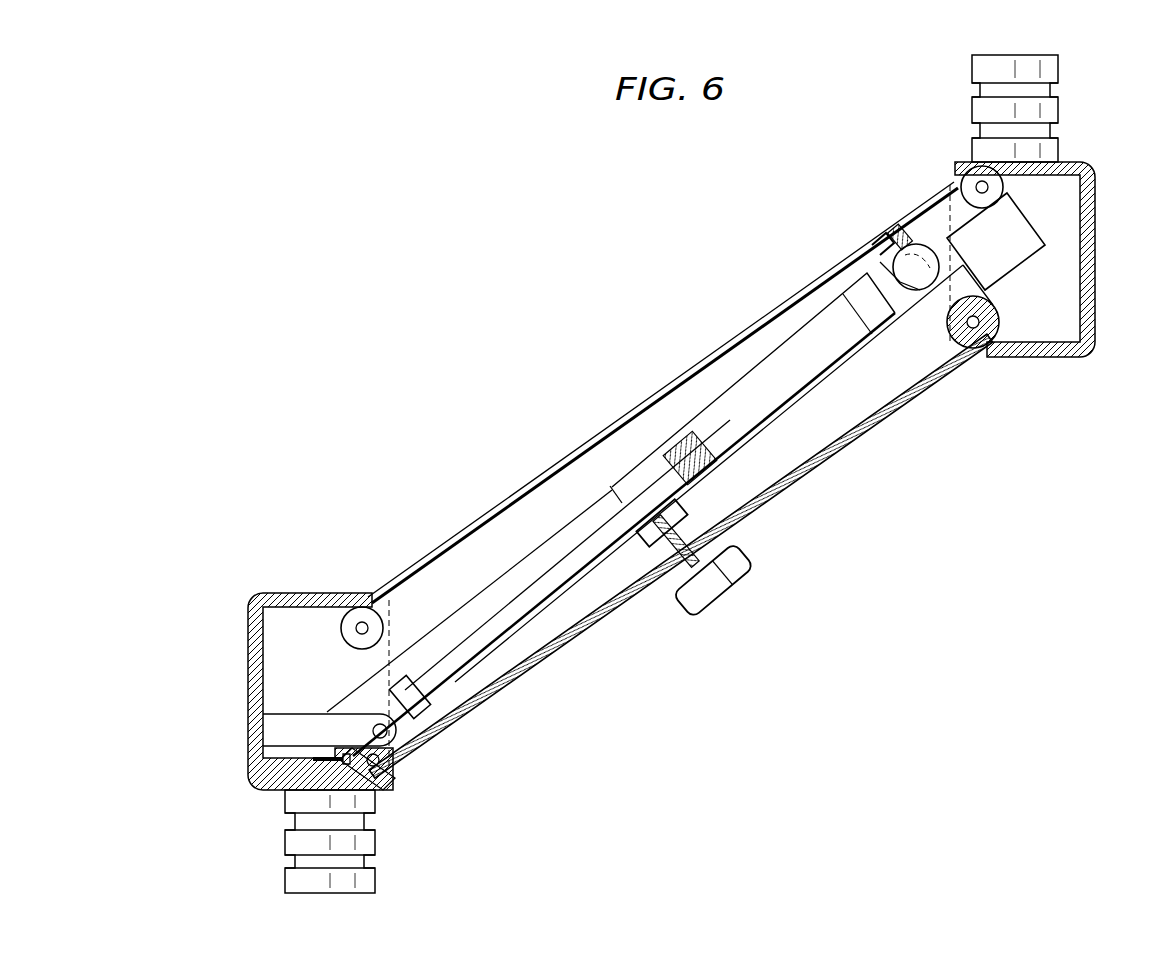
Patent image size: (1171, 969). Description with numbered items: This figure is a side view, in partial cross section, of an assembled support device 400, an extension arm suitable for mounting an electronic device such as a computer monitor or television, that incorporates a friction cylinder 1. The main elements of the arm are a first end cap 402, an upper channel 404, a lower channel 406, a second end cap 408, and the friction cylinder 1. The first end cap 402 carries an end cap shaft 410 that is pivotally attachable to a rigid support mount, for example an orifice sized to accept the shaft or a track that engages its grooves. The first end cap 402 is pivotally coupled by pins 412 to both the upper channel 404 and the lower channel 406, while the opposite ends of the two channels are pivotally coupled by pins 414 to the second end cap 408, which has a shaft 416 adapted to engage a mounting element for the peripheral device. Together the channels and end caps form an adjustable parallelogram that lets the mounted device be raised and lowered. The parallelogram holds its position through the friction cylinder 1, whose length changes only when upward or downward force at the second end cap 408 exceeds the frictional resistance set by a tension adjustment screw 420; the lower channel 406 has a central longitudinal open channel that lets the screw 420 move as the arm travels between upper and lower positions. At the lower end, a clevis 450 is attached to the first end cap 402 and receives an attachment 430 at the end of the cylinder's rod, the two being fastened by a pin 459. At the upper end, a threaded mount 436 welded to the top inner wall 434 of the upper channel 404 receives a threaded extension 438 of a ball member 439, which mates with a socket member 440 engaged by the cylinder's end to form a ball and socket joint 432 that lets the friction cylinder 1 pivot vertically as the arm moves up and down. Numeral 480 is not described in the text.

The friction cylinder 1 is at (784, 330).
The support device 400 is at (609, 348).
The first end cap 402 is at (258, 595).
The upper channel 404 is at (574, 447).
The lower channel 406 is at (605, 622).
The second end cap 408 is at (1095, 280).
The end cap shaft 410 is at (290, 855).
The pins 412 is at (385, 625).
The pins 414 is at (974, 180).
The shaft 416 is at (1060, 90).
The tension adjustment screw 420 is at (740, 575).
The attachment 430 is at (432, 712).
The ball and socket joint 432 is at (920, 318).
The top inner wall 434 is at (950, 205).
The threaded mount 436 is at (878, 240).
The threaded extension 438 is at (897, 228).
The ball member 439 is at (935, 262).
The socket member 440 is at (878, 266).
The clevis 450 is at (272, 735).
The pin 459 is at (395, 742).
The cylinder 480 is at (753, 363).